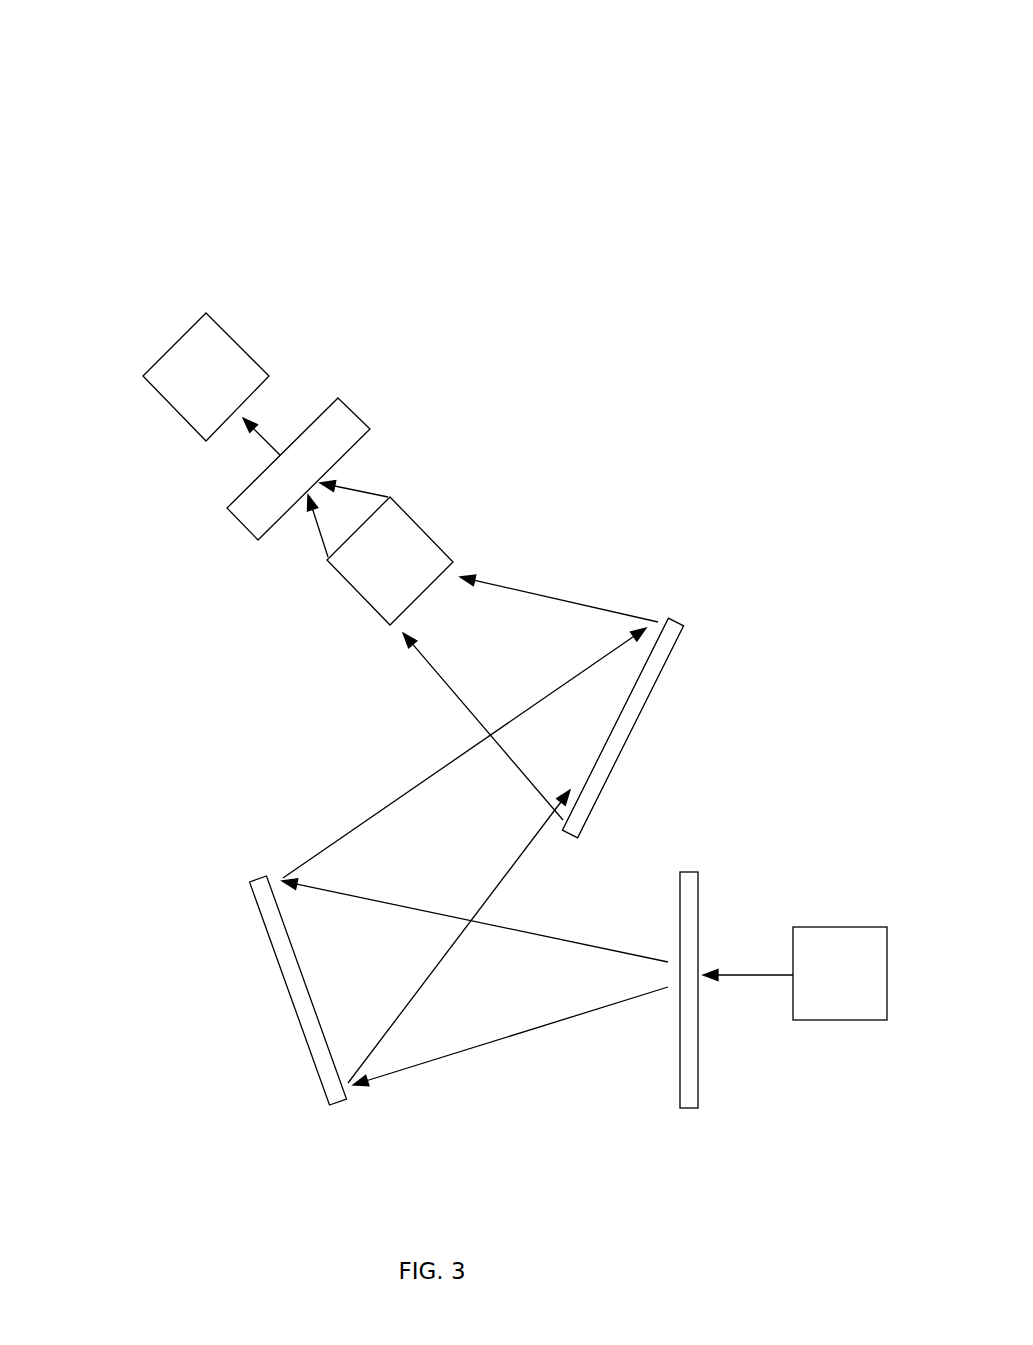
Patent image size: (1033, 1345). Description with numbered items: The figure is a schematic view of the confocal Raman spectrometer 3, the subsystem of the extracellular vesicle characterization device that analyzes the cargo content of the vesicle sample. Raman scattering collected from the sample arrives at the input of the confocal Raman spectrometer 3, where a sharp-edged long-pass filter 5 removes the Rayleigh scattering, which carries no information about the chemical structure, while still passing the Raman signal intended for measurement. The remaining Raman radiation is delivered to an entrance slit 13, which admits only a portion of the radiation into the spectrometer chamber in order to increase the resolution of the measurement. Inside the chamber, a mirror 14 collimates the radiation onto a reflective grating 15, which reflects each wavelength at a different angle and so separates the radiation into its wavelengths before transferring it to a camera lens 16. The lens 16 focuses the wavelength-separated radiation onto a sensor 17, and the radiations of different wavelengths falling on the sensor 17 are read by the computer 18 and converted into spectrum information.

The confocal Raman spectrometer 3 is at (165, 105).
The filter 5 is at (823, 948).
The slit 13 is at (688, 1045).
The mirror 14 is at (280, 933).
The grating 15 is at (665, 647).
The lens 16 is at (395, 550).
The sensor 17 is at (337, 423).
The computer 18 is at (201, 372).